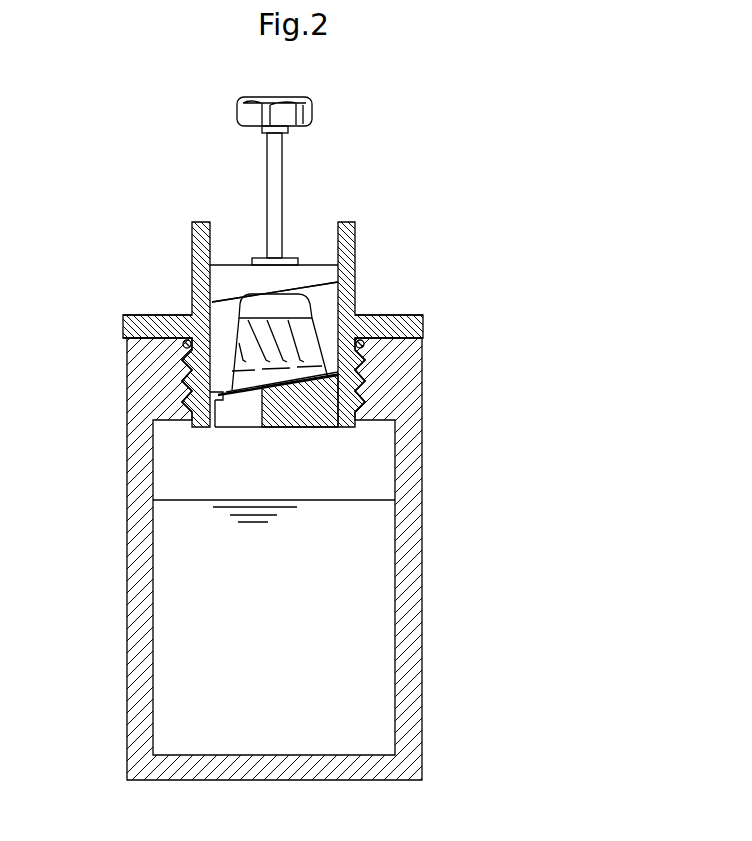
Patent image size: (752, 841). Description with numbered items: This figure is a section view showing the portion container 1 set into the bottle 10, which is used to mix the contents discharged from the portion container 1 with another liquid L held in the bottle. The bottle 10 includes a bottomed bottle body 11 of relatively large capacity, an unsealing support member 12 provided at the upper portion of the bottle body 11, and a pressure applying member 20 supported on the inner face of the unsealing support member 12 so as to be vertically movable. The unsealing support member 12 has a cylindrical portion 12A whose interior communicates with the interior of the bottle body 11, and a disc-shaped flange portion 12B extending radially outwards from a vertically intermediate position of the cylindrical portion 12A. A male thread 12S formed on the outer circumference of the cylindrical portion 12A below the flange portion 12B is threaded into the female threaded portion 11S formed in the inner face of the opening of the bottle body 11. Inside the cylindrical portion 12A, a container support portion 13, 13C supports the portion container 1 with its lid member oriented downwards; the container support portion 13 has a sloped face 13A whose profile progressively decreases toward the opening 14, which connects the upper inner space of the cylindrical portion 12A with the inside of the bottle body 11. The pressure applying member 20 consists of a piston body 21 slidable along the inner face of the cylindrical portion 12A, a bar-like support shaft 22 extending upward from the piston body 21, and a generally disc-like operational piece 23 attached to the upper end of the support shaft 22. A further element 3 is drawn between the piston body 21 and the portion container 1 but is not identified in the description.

The bottle 10 is at (555, 322).
The bottle body 11 is at (130, 665).
The female threaded portion 11S is at (363, 408).
The liquid L is at (355, 600).
The unsealing support member 12 is at (358, 243).
The cylindrical portion 12A is at (192, 253).
The flange portion 12B is at (152, 315).
The male thread 12S is at (368, 378).
The pressure applying member 20 is at (250, 163).
The operational piece 23 is at (240, 112).
The support shaft 22 is at (276, 160).
The piston body 21 is at (308, 270).
The sheet 3 is at (268, 293).
The portion container 1 is at (307, 330).
The container support portion 13 is at (287, 427).
The sloped face 13A is at (298, 378).
The container support portion 13C is at (217, 402).
The opening 14 is at (224, 428).